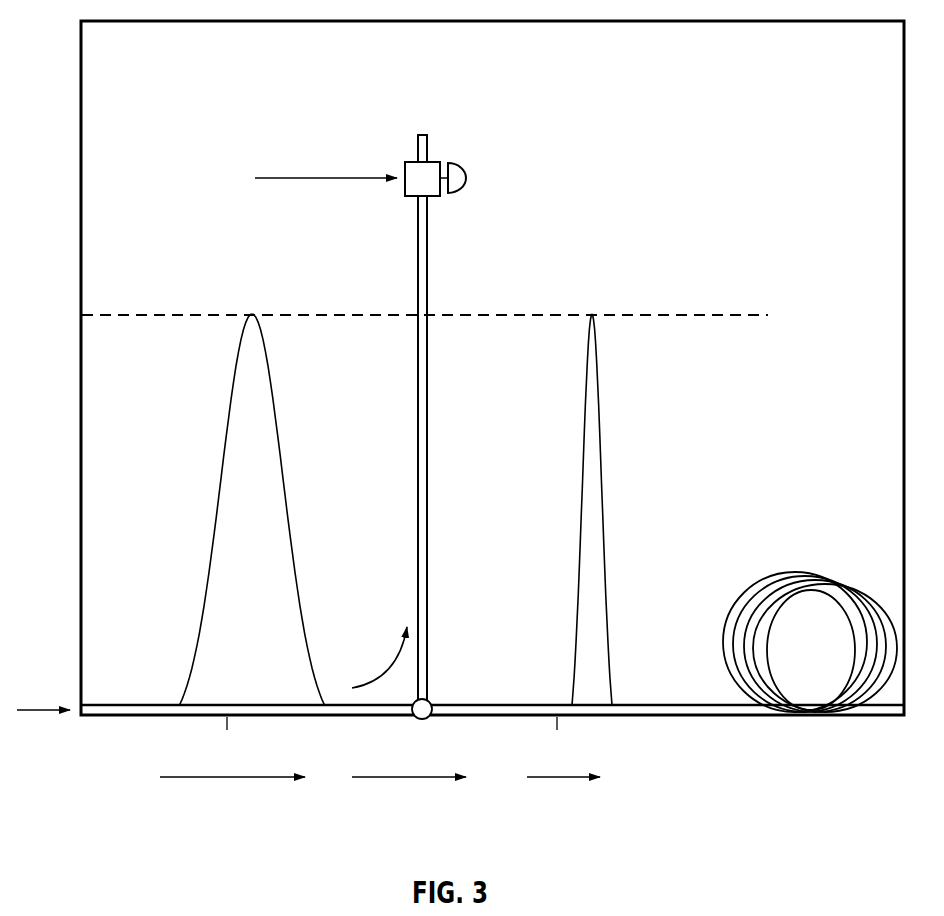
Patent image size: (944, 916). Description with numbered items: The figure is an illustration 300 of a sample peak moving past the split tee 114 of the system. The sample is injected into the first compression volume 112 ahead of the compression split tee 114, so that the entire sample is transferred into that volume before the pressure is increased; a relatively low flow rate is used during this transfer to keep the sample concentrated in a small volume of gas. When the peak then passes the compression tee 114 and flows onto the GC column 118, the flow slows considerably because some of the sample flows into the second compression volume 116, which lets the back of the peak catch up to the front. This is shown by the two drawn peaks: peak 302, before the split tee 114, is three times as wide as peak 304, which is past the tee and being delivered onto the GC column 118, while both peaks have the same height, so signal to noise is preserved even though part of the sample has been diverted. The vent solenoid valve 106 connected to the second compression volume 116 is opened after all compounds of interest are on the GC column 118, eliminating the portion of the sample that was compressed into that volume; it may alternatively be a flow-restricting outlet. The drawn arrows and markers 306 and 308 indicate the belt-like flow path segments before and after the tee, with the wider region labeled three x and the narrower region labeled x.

The illustration 300 is at (213, 824).
The vent solenoid valve 106 is at (327, 177).
The first compression volume 112 is at (118, 707).
The split tee 114 is at (430, 700).
The second compression volume 116 is at (427, 456).
The GC column 118 is at (800, 715).
The peak 302 is at (290, 508).
The peak 304 is at (602, 500).
The first segment 306 is at (352, 717).
The second segment 308 is at (520, 717).